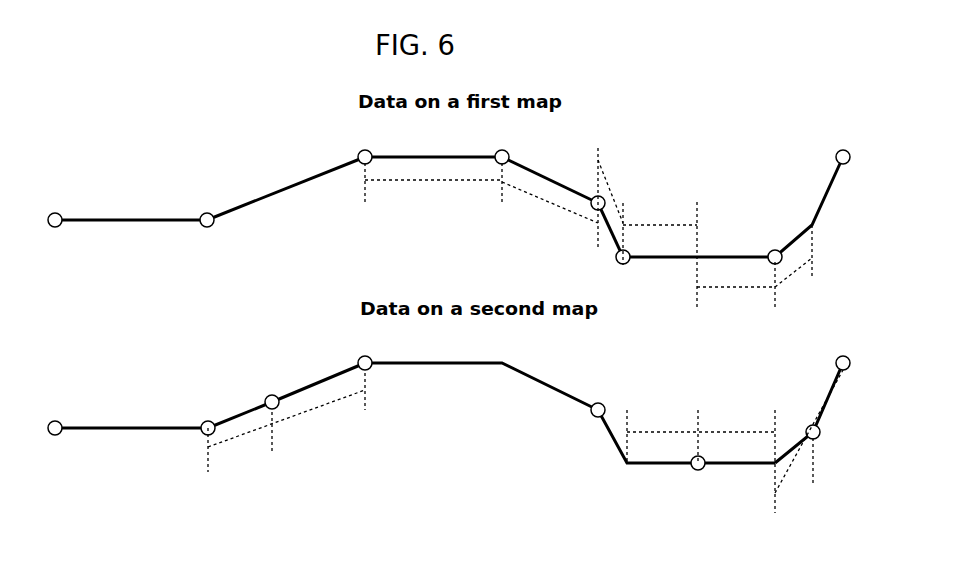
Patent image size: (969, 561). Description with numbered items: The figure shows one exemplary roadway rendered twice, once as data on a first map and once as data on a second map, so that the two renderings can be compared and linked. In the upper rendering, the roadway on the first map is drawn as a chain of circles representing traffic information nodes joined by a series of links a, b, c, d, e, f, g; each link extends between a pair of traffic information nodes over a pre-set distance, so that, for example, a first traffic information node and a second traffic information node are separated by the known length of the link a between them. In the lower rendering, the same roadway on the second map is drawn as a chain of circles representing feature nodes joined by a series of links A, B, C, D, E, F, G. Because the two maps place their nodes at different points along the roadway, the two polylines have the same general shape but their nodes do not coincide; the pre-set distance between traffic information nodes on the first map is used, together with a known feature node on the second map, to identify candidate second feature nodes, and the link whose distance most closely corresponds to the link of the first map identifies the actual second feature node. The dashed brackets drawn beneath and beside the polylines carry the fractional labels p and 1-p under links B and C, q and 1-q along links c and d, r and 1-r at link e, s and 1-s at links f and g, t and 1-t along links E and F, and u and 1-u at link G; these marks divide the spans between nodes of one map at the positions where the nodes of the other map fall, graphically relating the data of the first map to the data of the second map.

The link between traffic information nodes a is at (131, 202).
The link between traffic information nodes b is at (286, 186).
The link between traffic information nodes c is at (433, 141).
The link between traffic information nodes d is at (550, 175).
The link between traffic information nodes e is at (608, 240).
The link between traffic information nodes f is at (699, 243).
The link between traffic information nodes g is at (809, 207).
The link between feature nodes A is at (131, 410).
The link between feature nodes B is at (240, 402).
The link between feature nodes C is at (318, 379).
The link between feature nodes D is at (481, 374).
The link between feature nodes E is at (648, 455).
The link between feature nodes F is at (736, 480).
The link between feature nodes G is at (809, 413).
The ratio p is at (286, 431).
The ratio 1-p is at (337, 408).
The ratio q is at (433, 188).
The ratio 1-q is at (550, 198).
The ratio r is at (610, 212).
The ratio 1-r is at (660, 249).
The ratio s is at (736, 293).
The ratio 1-s is at (794, 272).
The ratio t is at (701, 431).
The ratio 1-t is at (750, 455).
The ratio u is at (809, 444).
The ratio 1-u is at (853, 453).